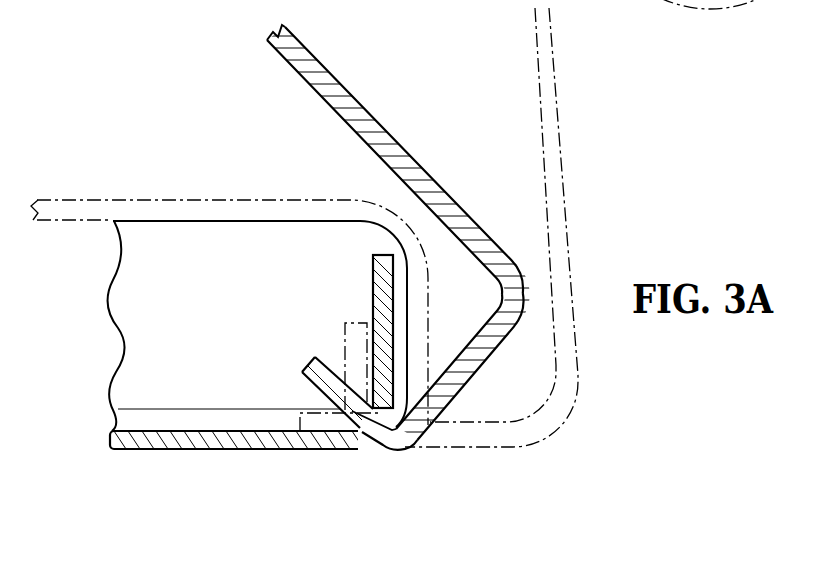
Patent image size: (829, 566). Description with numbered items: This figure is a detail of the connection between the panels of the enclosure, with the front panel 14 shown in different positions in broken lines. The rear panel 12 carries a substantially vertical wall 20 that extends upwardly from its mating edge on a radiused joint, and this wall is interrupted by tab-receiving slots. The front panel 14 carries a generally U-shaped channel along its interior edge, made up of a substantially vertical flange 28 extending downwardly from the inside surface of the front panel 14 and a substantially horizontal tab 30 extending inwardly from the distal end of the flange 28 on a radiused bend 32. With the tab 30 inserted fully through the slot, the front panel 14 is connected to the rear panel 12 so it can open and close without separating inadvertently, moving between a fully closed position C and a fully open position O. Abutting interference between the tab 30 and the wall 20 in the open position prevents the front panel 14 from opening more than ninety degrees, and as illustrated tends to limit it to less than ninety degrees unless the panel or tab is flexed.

The rear panel 12 is at (219, 452).
The front panel 14 is at (382, 134).
The vertical wall 20 is at (383, 331).
The vertical flange 28 is at (478, 368).
The horizontal tab 30 is at (325, 392).
The radiused bend 32 is at (393, 432).
The fully closed position C is at (210, 200).
The fully open position O is at (576, 140).